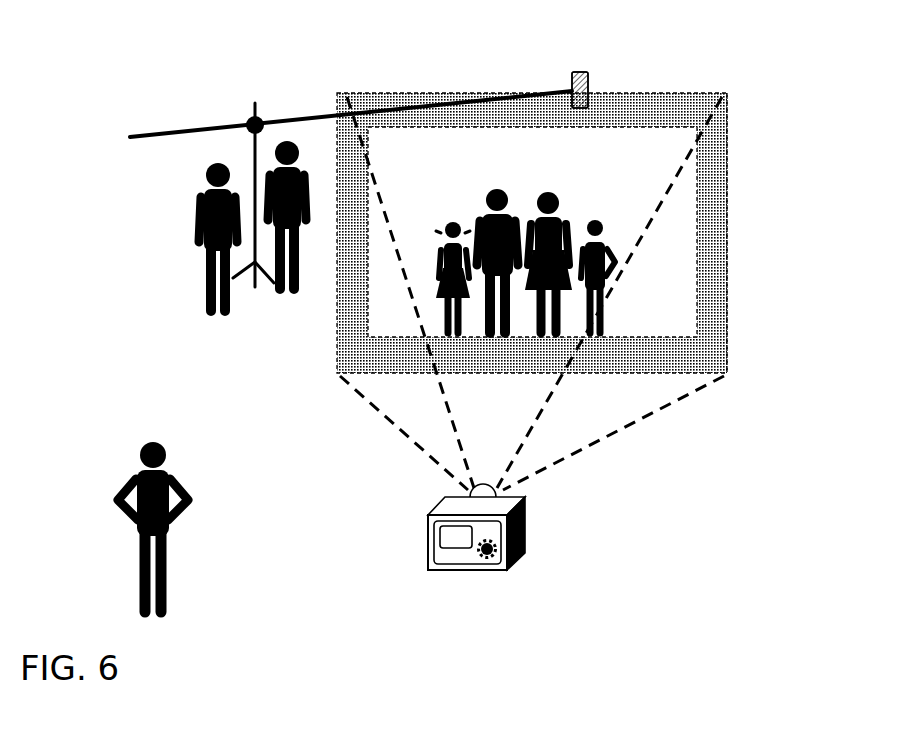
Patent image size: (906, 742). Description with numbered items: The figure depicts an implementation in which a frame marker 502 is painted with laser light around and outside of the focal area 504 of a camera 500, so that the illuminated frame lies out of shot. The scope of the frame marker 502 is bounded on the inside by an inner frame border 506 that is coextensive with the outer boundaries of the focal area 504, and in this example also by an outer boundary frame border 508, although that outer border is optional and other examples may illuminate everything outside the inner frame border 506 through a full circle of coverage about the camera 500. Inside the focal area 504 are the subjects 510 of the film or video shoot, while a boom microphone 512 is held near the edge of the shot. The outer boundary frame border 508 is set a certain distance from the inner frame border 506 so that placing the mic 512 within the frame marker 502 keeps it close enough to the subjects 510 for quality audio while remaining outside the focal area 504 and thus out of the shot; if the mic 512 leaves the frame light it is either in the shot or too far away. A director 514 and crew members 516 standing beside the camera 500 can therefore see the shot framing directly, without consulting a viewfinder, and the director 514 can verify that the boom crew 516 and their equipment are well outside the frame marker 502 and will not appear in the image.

The camera 500 is at (428, 530).
The frame marker 502 is at (710, 287).
The focal area 504 is at (433, 157).
The inner frame border 506 is at (697, 210).
The outer boundary frame border 508 is at (728, 230).
The subjects 510 is at (607, 213).
The boom microphone 512 is at (572, 80).
The director 514 is at (130, 472).
The crew members 516 is at (190, 172).